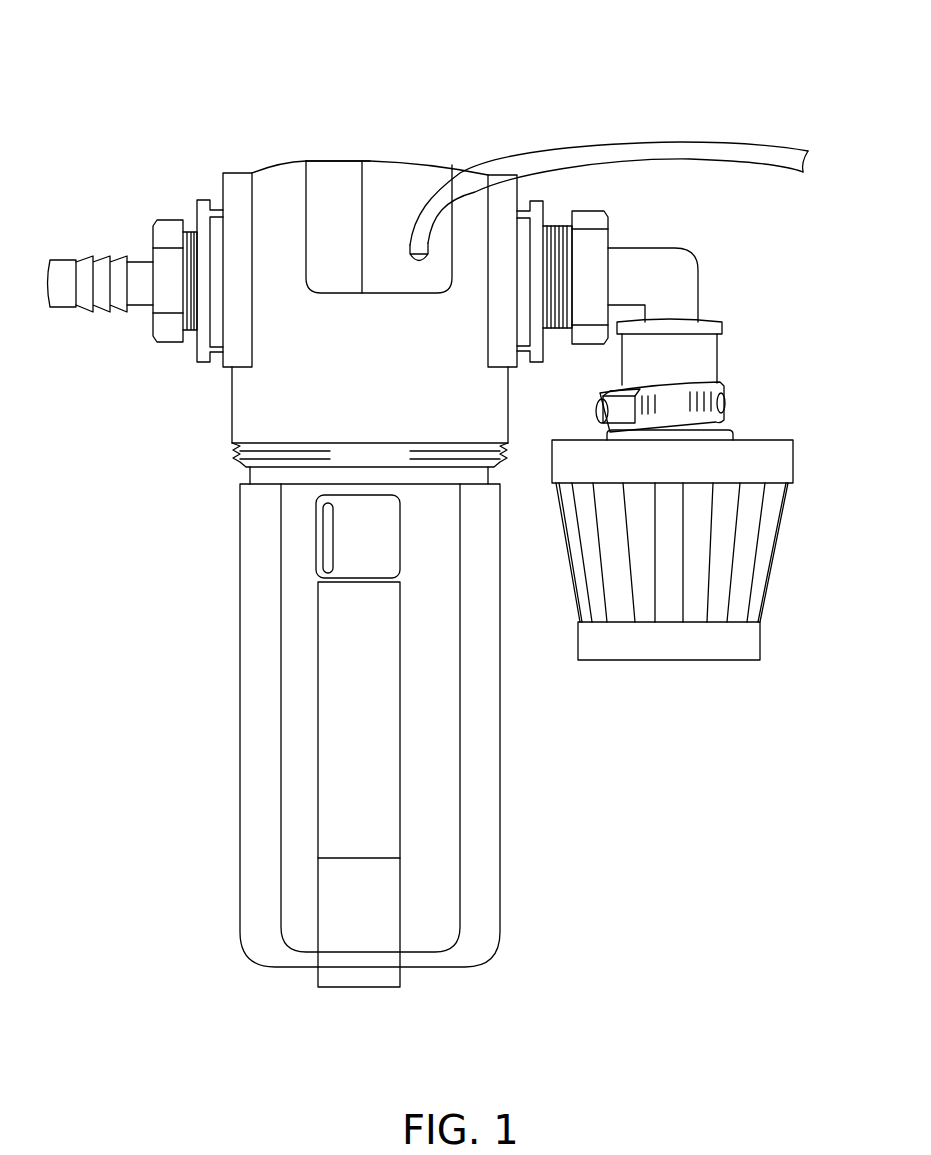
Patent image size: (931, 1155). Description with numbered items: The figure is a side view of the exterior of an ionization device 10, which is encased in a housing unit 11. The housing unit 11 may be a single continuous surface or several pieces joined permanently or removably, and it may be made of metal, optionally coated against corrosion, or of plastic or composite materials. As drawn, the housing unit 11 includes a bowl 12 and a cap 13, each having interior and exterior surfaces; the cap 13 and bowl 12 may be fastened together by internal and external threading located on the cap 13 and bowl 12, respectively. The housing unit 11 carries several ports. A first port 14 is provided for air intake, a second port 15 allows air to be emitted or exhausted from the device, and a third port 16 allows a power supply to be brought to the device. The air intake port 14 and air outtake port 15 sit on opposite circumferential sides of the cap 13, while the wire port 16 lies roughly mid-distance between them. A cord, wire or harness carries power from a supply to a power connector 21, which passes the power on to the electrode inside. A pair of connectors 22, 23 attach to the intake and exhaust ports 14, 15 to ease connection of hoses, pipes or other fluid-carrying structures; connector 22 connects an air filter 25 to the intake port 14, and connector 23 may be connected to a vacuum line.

The ionization device 10 is at (219, 52).
The housing unit 11 is at (232, 511).
The bowl 12 is at (240, 745).
The cap 13 is at (360, 162).
The first port 14 is at (553, 225).
The second port 15 is at (192, 222).
The third port 16 is at (423, 200).
The power connector 21 is at (668, 150).
The connector 22 is at (698, 278).
The connector 23 is at (47, 300).
The air filter 25 is at (756, 580).